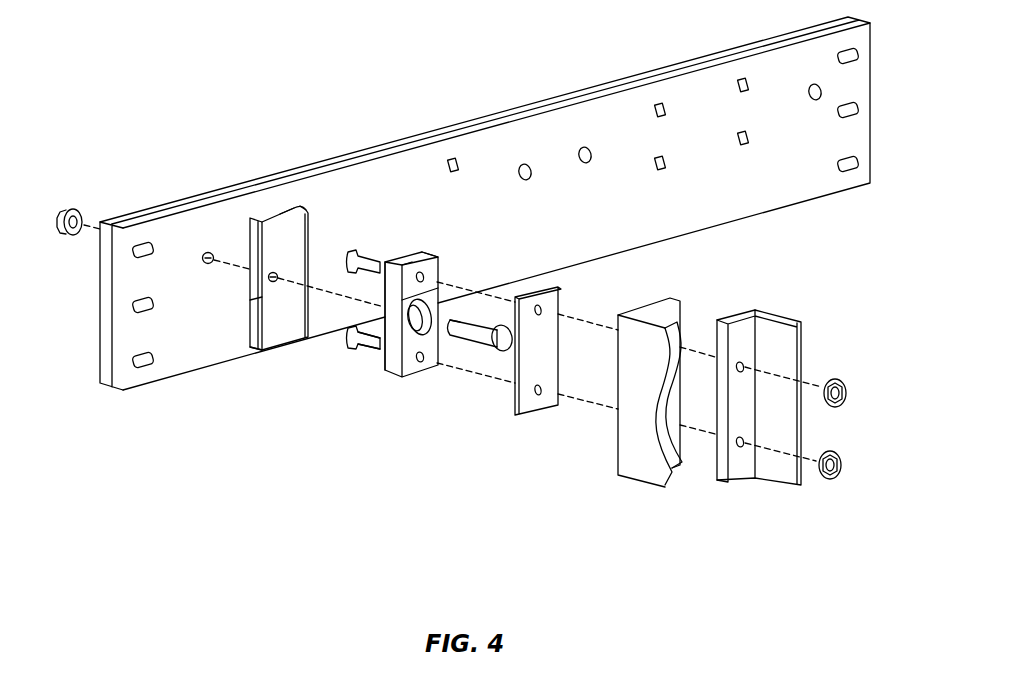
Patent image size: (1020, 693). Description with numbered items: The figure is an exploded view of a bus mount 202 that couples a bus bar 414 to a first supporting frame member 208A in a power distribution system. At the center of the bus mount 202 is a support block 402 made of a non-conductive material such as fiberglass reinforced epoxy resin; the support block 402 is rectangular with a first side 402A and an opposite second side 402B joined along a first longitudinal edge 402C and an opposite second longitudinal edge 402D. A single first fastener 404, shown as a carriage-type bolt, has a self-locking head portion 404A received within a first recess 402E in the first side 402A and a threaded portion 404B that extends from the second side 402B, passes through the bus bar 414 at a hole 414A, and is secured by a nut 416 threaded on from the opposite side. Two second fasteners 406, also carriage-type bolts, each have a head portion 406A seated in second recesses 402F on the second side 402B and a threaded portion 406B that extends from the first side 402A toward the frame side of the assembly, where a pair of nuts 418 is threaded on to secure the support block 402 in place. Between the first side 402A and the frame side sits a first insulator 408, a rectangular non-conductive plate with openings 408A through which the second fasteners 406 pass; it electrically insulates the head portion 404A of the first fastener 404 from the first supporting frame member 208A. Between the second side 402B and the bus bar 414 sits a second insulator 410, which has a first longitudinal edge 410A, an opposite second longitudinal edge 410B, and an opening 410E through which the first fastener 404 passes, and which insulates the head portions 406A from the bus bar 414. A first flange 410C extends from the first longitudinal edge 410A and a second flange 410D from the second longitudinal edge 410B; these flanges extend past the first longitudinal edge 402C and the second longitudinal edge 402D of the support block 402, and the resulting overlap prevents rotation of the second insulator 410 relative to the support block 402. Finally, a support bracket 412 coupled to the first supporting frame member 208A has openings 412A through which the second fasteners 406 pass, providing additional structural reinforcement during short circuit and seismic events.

The bus mount 202 is at (338, 457).
The first supporting frame member 208A is at (665, 298).
The support block 402 is at (403, 374).
The first side 402A is at (436, 272).
The second side 402B is at (404, 262).
The first longitudinal edge 402C is at (391, 262).
The second longitudinal edge 402D is at (436, 253).
The first recess 402E is at (421, 363).
The second recesses 402F is at (419, 282).
The first fastener 404 is at (466, 328).
The head portion 404A is at (503, 352).
The threaded portion 404B is at (448, 326).
The second fasteners 406 is at (378, 252).
The head portion 406A is at (348, 333).
The threaded portion 406B is at (370, 356).
The first insulator 408 is at (545, 292).
The openings 408A is at (541, 311).
The second insulator 410 is at (262, 213).
The first longitudinal edge 410A is at (250, 300).
The second longitudinal edge 410B is at (296, 203).
The first flange 410C is at (250, 348).
The second flange 410D is at (302, 205).
The opening 410E is at (274, 282).
The support bracket 412 is at (780, 313).
The openings 412A is at (745, 366).
The bus bar 414 is at (657, 70).
The hole 414A is at (208, 252).
The nut 416 is at (78, 207).
The nuts 418 is at (836, 379).